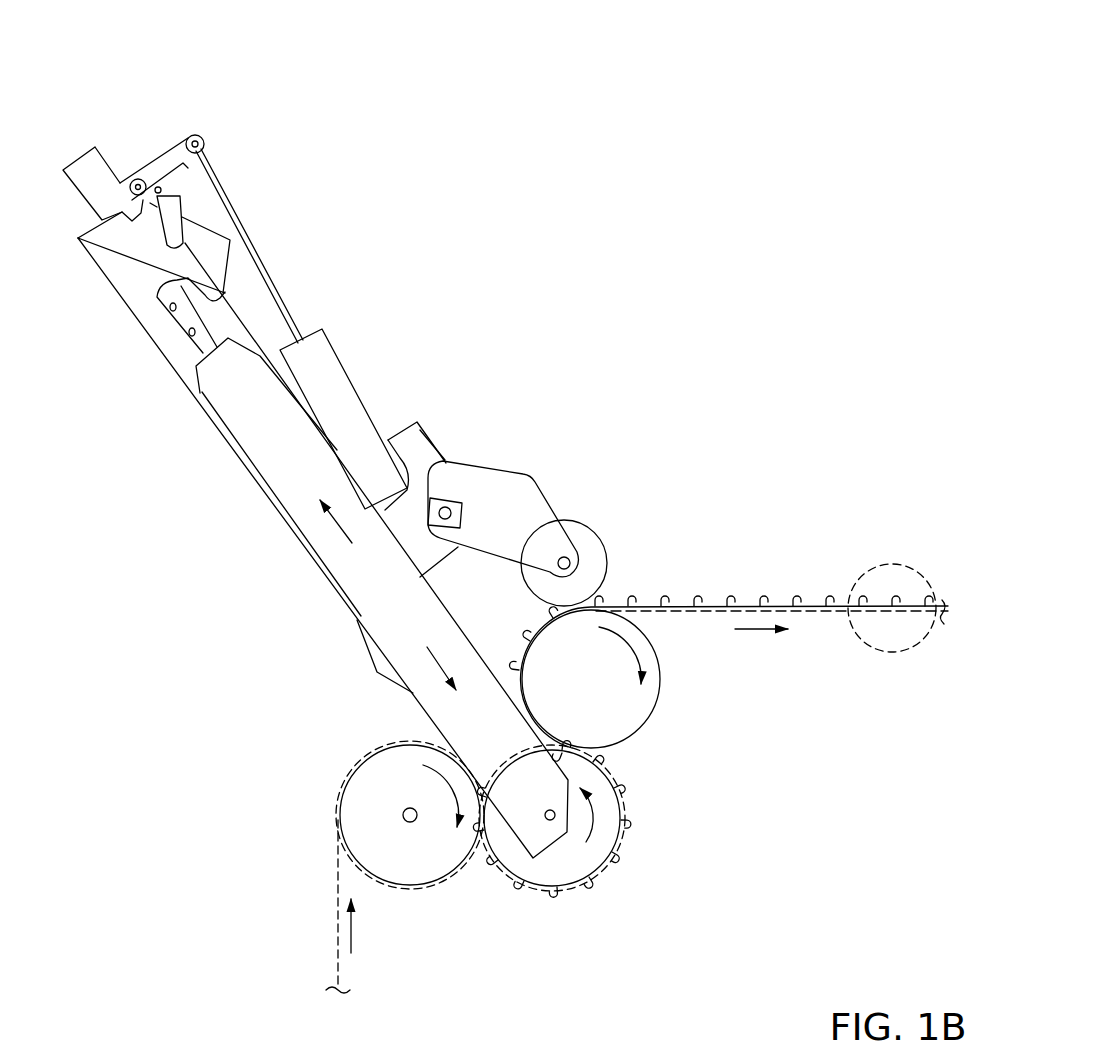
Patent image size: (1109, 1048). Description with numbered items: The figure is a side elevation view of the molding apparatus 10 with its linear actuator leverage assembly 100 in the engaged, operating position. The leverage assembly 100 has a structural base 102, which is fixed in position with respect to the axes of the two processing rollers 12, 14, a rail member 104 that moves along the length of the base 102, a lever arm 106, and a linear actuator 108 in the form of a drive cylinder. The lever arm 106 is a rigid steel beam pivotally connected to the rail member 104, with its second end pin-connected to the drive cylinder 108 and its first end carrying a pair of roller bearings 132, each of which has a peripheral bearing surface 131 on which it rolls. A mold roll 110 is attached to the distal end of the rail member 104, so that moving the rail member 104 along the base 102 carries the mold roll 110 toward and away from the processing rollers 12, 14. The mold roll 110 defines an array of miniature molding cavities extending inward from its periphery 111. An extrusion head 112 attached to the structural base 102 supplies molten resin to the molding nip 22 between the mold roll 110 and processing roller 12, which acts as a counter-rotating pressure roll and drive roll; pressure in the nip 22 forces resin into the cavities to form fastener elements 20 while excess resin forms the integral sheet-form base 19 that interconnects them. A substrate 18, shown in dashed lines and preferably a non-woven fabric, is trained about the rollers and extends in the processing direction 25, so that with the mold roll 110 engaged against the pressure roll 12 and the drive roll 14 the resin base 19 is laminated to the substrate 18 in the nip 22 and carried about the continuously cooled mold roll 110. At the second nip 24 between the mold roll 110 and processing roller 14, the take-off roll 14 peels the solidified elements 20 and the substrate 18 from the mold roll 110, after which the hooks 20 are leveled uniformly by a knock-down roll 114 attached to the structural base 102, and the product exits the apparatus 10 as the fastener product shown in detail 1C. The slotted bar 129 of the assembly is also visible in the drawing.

The molding apparatus 10 is at (450, 58).
The linear actuator leverage assembly 100 is at (193, 138).
The structural base 102 is at (150, 288).
The rail member 104 is at (268, 456).
The lever arm 106 is at (168, 146).
The linear actuator 108 is at (344, 360).
The mold roll 110 is at (612, 840).
The periphery 111 is at (552, 893).
The extrusion head 112 is at (372, 646).
The knock-down roll 114 is at (575, 533).
The slotted bar 129 is at (168, 229).
The peripheral bearing surface 131 is at (133, 178).
The roller bearings 132 is at (98, 202).
The processing roller 12 is at (368, 777).
The processing roller 14 is at (650, 695).
The substrate 18 is at (338, 880).
The resin sheet-form base 19 is at (649, 603).
The fastener elements 20 is at (702, 603).
The molding nip 22 is at (477, 852).
The second nip 24 is at (606, 749).
The processing direction 25 is at (752, 632).
The detail circle 1C is at (888, 566).